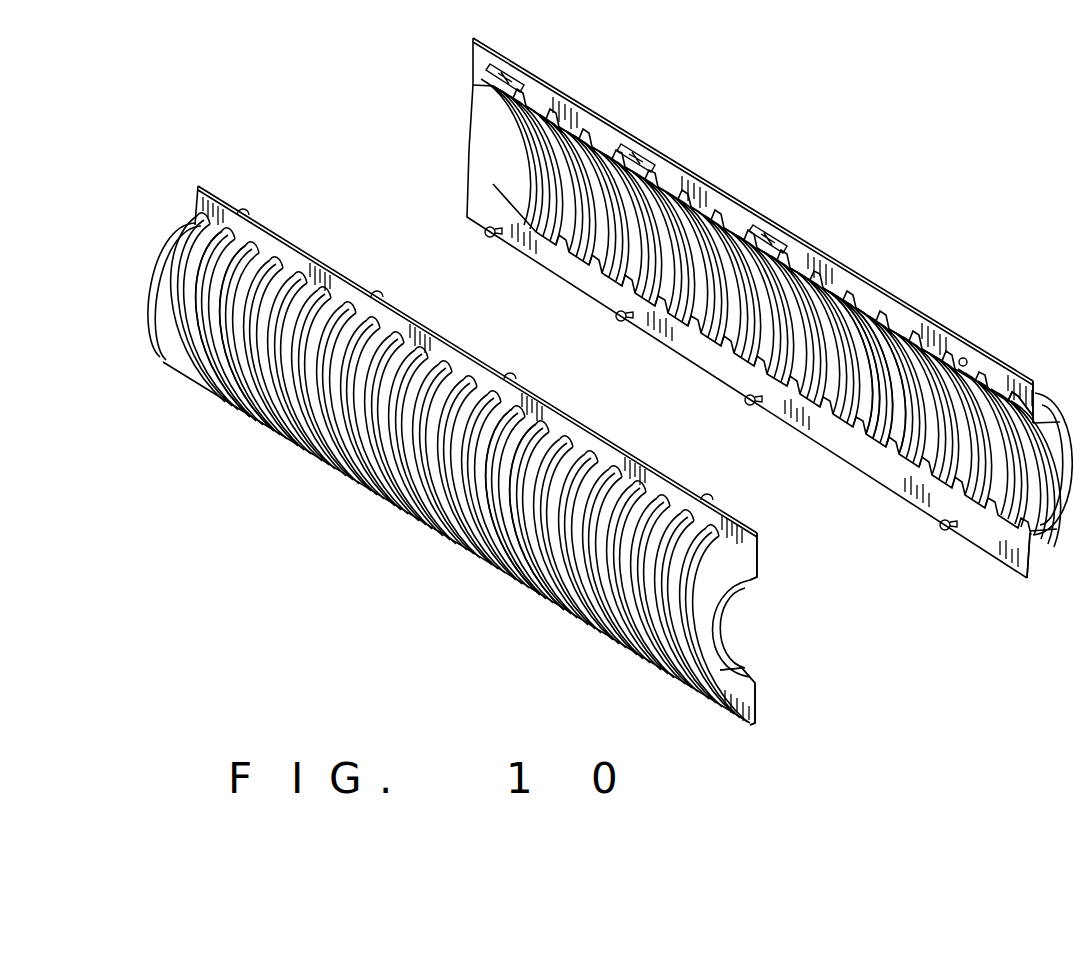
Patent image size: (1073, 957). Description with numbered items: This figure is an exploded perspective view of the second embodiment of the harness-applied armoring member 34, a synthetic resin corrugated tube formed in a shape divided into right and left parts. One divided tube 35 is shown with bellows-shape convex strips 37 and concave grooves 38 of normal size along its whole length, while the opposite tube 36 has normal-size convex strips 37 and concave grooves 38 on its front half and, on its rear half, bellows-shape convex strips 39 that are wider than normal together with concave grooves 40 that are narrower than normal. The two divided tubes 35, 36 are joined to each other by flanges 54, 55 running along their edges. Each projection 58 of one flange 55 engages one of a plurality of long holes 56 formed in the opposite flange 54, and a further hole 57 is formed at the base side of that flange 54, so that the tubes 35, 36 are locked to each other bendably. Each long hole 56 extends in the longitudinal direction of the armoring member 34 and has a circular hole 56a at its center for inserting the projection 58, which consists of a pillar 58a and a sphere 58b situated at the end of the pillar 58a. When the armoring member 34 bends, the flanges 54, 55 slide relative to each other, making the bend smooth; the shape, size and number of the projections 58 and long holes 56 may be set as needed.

The harness-applied armoring member 34 is at (942, 96).
The divided tube 35 is at (880, 266).
The opposite tube 36 is at (567, 395).
The bellows-shape convex strip 37 is at (213, 390).
The concave groove 38 is at (240, 392).
The bellows-shape convex strip 39 is at (503, 556).
The concave groove 40 is at (537, 552).
The flange 54 is at (760, 690).
The flange 55 is at (760, 558).
The long hole 56 is at (780, 238).
The circular hole 56a is at (770, 230).
The hole 57 is at (966, 358).
The projection 58 is at (506, 374).
The pillar 58a is at (765, 408).
The sphere 58b is at (755, 408).